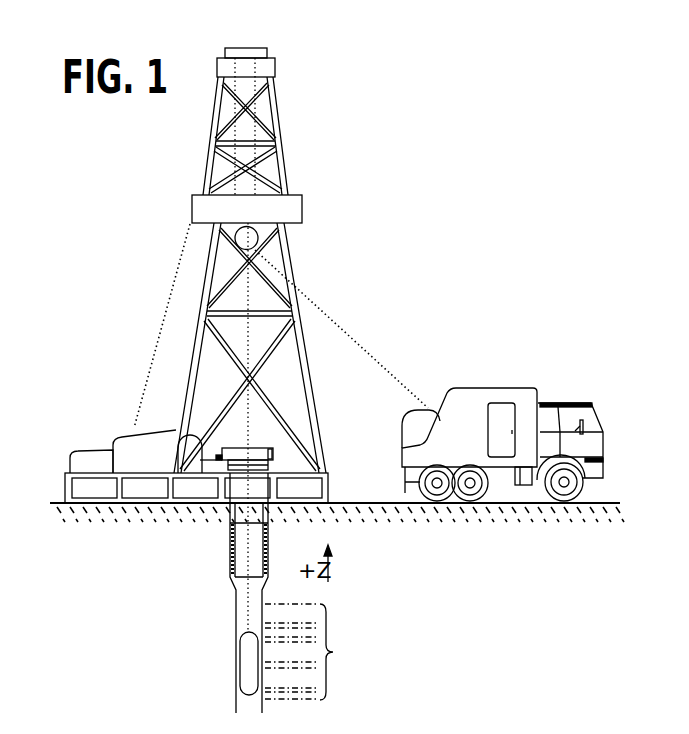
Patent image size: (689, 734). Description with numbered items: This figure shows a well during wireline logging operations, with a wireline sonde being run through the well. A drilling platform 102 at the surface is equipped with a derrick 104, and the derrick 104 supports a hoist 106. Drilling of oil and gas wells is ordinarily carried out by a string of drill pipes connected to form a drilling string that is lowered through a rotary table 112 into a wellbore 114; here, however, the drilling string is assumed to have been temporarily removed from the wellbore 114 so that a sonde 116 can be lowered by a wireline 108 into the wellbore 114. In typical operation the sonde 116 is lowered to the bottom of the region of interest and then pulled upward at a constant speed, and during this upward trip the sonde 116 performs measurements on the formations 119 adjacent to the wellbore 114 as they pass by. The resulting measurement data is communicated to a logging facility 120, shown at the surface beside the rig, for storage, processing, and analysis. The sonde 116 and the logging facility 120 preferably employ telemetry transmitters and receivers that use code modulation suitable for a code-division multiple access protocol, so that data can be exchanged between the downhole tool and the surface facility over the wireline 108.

The drilling platform 102 is at (328, 480).
The derrick 104 is at (320, 437).
The hoist 106 is at (256, 238).
The wireline 108 is at (318, 310).
The rotary table 112 is at (263, 450).
The wellbore 114 is at (238, 592).
The sonde 116 is at (243, 652).
The formations 119 is at (318, 652).
The logging facility 120 is at (465, 391).